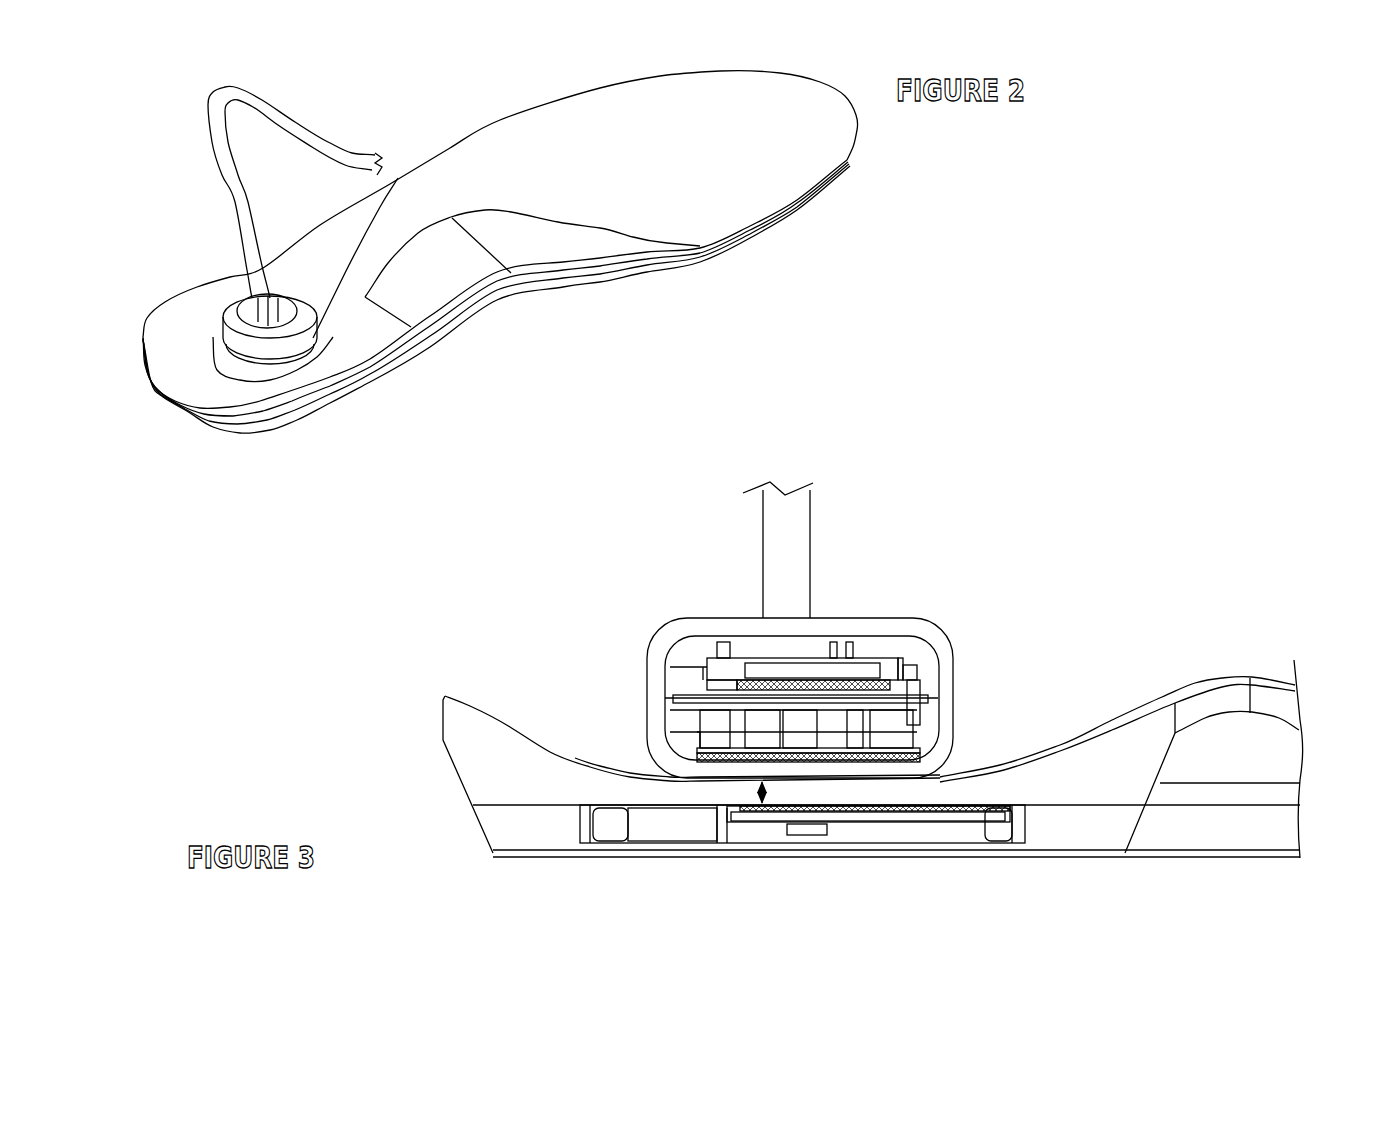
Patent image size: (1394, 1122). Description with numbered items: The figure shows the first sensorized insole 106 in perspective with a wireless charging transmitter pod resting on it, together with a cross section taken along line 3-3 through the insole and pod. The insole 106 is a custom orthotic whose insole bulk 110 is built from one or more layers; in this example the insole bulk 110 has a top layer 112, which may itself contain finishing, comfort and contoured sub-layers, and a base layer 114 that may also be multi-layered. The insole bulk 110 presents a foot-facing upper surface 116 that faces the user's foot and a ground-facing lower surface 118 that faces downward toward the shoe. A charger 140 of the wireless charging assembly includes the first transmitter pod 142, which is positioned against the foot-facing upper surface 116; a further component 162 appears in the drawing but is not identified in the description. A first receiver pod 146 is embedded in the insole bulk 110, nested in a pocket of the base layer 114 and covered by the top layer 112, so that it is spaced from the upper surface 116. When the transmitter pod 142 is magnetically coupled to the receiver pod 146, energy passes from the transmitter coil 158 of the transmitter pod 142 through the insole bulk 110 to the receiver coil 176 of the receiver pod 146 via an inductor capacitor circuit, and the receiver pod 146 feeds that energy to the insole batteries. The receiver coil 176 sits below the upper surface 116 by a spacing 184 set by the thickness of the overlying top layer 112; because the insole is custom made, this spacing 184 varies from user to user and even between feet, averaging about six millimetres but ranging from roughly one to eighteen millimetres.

In FIG. 2, the first sensorized insole 106 is at (520, 108).
In FIG. 3, the first sensorized insole 106 is at (1108, 716).
In FIG. 2, the insole bulk 110 is at (513, 295).
In FIG. 3, the insole bulk 110 is at (1234, 738).
In FIG. 2, the top layer 112 is at (180, 400).
In FIG. 3, the top layer 112 is at (455, 752).
In FIG. 2, the base layer 114 is at (292, 420).
In FIG. 3, the base layer 114 is at (500, 822).
In FIG. 2, the foot-facing upper surface 116 is at (663, 117).
In FIG. 3, the foot-facing upper surface 116 is at (550, 755).
In FIG. 3, the ground-facing lower surface 118 is at (535, 855).
In FIG. 2, the charger 140 is at (212, 92).
In FIG. 3, the charger 140 is at (787, 513).
In FIG. 2, the first transmitter pod 142 is at (228, 305).
In FIG. 3, the first transmitter pod 142 is at (668, 618).
In FIG. 3, the first receiver pod 146 is at (970, 837).
In FIG. 3, the transmitter coil 158 is at (890, 787).
In FIG. 2, the cable conductor 162 is at (338, 155).
In FIG. 3, the cable conductor 162 is at (793, 552).
In FIG. 3, the receiver coil 176 is at (860, 823).
In FIG. 3, the spacing 184 is at (760, 790).
In FIG. 2, the section line 3 is at (127, 183).